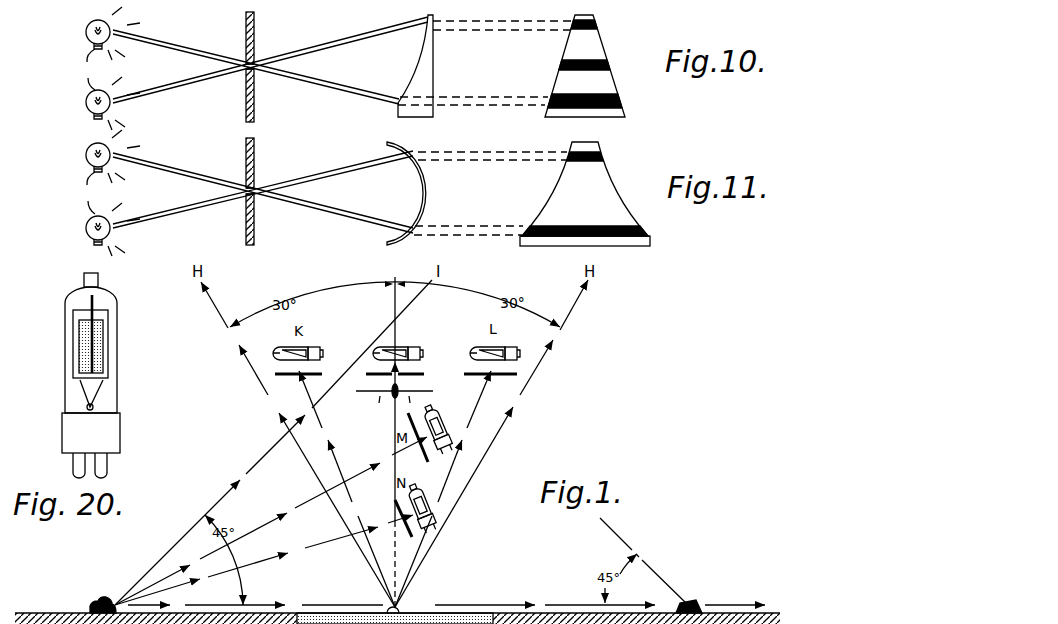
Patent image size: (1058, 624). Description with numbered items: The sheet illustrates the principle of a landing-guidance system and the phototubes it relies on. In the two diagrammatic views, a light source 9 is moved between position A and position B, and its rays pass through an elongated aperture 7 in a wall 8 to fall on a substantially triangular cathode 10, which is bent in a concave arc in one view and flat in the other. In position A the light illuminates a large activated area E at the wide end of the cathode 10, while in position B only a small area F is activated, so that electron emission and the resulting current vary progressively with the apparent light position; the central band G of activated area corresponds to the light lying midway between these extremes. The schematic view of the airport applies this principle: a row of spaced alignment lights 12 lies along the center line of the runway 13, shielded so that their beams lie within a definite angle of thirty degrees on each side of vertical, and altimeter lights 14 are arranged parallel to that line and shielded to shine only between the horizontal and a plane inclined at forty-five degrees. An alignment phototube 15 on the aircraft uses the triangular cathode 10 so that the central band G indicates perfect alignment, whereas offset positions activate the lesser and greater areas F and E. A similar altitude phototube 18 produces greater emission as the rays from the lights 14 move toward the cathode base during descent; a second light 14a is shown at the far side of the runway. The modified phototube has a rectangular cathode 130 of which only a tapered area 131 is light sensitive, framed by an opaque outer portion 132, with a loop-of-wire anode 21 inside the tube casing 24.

In FIG. 10, the elongated aperture 7 is at (248, 63).
In FIG. 11, the elongated aperture 7 is at (248, 187).
In FIG. 1, the elongated aperture 7 is at (304, 376).
In FIG. 10, the wall 8 is at (246, 22).
In FIG. 11, the wall 8 is at (246, 146).
In FIG. 1, the wall 8 is at (277, 373).
In FIG. 10, the light source 9 is at (89, 69).
In FIG. 11, the light source 9 is at (89, 193).
In FIG. 10, the triangular cathode 10 is at (430, 68).
In FIG. 11, the triangular cathode 10 is at (425, 190).
In FIG. 1, the triangular cathode 10 is at (309, 348).
In FIG. 1, the alignment lights 12 is at (408, 604).
In FIG. 1, the runway 13 is at (480, 612).
In FIG. 1, the altimeter lights 14 is at (108, 600).
In FIG. 1, the light source 14a is at (698, 600).
In FIG. 1, the alignment phototube 15 is at (277, 350).
In FIG. 1, the altitude phototube 18 is at (430, 408).
In FIG. 20, the anode 21 is at (95, 302).
In FIG. 20, the tube casing 24 is at (118, 396).
In FIG. 20, the cathode 130 is at (110, 322).
In FIG. 20, the tapered area 131 is at (95, 350).
In FIG. 20, the outer portion 132 is at (104, 337).
In FIG. 10, the light position A is at (101, 33).
In FIG. 11, the light position A is at (101, 156).
In FIG. 10, the light position B is at (101, 103).
In FIG. 11, the light position B is at (101, 229).
In FIG. 10, the activated area E is at (622, 100).
In FIG. 11, the activated area E is at (644, 228).
In FIG. 10, the activated area F is at (600, 24).
In FIG. 11, the activated area F is at (603, 156).
In FIG. 10, the central band G is at (610, 66).